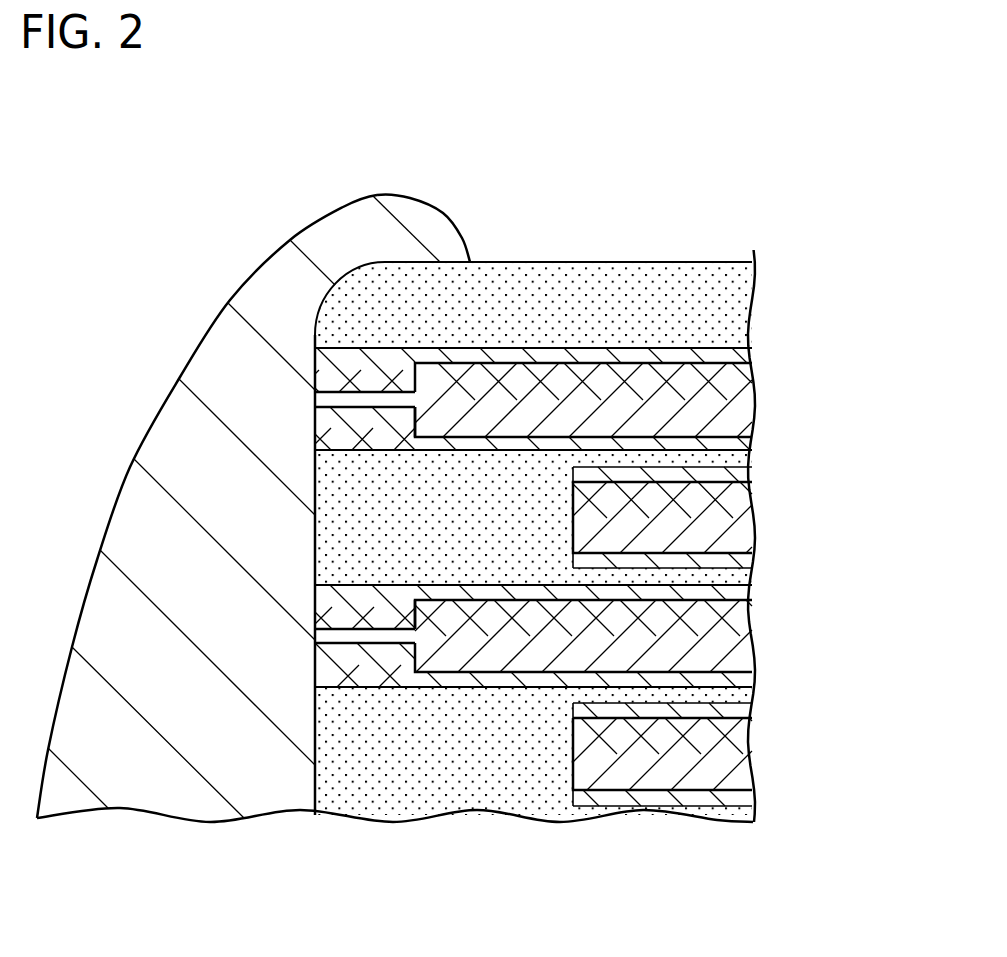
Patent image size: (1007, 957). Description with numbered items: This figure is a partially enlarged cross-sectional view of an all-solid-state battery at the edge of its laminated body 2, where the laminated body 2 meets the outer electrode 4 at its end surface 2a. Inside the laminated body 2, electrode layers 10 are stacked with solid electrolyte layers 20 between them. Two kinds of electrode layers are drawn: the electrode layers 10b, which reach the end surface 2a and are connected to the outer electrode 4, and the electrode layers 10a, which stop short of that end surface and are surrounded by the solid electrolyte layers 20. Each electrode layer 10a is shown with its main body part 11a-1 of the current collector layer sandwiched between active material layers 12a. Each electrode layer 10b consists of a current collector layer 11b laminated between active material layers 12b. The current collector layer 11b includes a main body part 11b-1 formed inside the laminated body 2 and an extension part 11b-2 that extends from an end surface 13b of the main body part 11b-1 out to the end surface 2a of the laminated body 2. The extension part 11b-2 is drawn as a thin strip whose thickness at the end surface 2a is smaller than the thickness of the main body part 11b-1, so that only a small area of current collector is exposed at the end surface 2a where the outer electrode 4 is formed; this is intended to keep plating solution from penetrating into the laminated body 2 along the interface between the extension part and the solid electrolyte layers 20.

The laminated body 2 is at (705, 260).
The end surface of the laminated body 2a is at (312, 502).
The outer electrode 4 is at (307, 250).
The electrode layer 10 is at (521, 511).
The electrode layer 10a is at (719, 606).
The electrode layer 10b is at (465, 511).
The main body part 11a-1 is at (727, 522).
The current collector layer 11b is at (533, 511).
The main body part 11b-1 is at (543, 400).
The extension part 11b-2 is at (367, 397).
The active material layer 12a is at (735, 477).
The active material layer 12b is at (340, 372).
The end surface of the main body part 13b is at (412, 423).
The solid electrolyte layer 20 is at (713, 308).